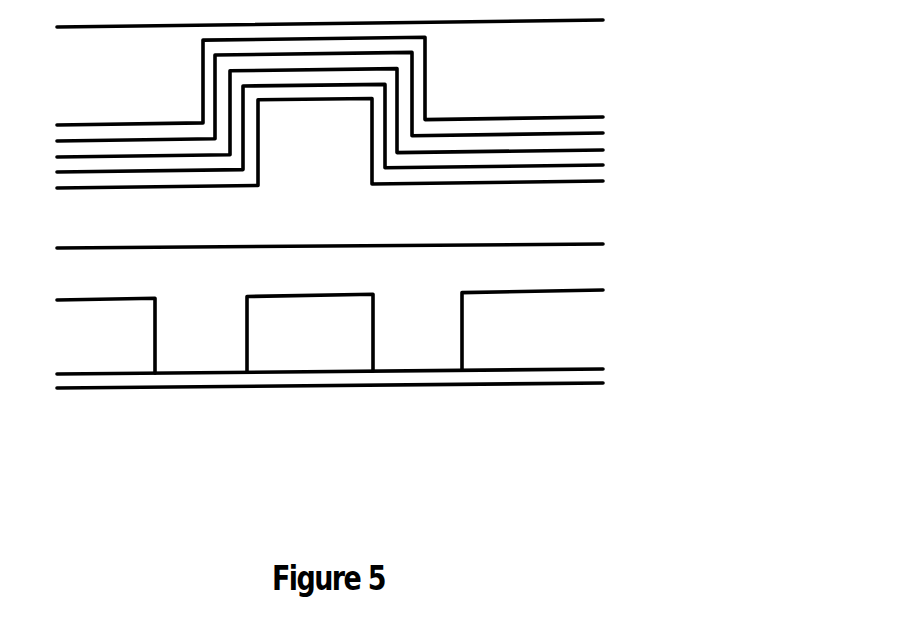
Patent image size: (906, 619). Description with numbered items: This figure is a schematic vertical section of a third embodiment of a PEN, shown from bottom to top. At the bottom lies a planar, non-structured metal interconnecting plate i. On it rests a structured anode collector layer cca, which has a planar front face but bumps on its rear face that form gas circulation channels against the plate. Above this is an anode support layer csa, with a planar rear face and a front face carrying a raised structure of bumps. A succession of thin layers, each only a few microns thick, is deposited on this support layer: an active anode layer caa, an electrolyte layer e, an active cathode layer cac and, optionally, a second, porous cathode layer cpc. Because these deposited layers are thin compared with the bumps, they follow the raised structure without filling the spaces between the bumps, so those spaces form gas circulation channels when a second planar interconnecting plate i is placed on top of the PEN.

The interconnecting plate i is at (631, 30).
The porous cathode layer cpc is at (622, 121).
The active cathode layer cac is at (624, 141).
The electrolyte layer e is at (628, 162).
The active anode layer caa is at (626, 184).
The anode support layer csa is at (626, 232).
The anode collector layer cca is at (626, 272).